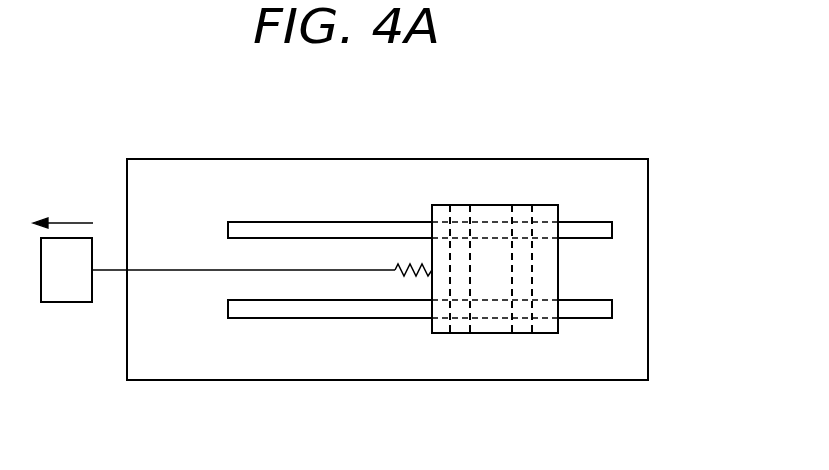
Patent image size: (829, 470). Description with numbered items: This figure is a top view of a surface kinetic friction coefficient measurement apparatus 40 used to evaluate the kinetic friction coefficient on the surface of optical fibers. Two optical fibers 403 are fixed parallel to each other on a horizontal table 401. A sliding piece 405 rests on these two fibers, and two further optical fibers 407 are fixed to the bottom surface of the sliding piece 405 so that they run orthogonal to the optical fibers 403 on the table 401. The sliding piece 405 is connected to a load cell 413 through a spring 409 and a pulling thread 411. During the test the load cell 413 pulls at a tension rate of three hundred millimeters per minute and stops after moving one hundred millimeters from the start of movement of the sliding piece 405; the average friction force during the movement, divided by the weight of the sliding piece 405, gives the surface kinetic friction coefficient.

The surface kinetic friction coefficient measurement apparatus 40 is at (381, 144).
The horizontal table 401 is at (138, 187).
The optical fibers 403 is at (260, 228).
The sliding piece 405 is at (490, 204).
The optical fibers 407 is at (462, 278).
The spring 409 is at (410, 278).
The pulling thread 411 is at (186, 272).
The load cell 413 is at (62, 304).